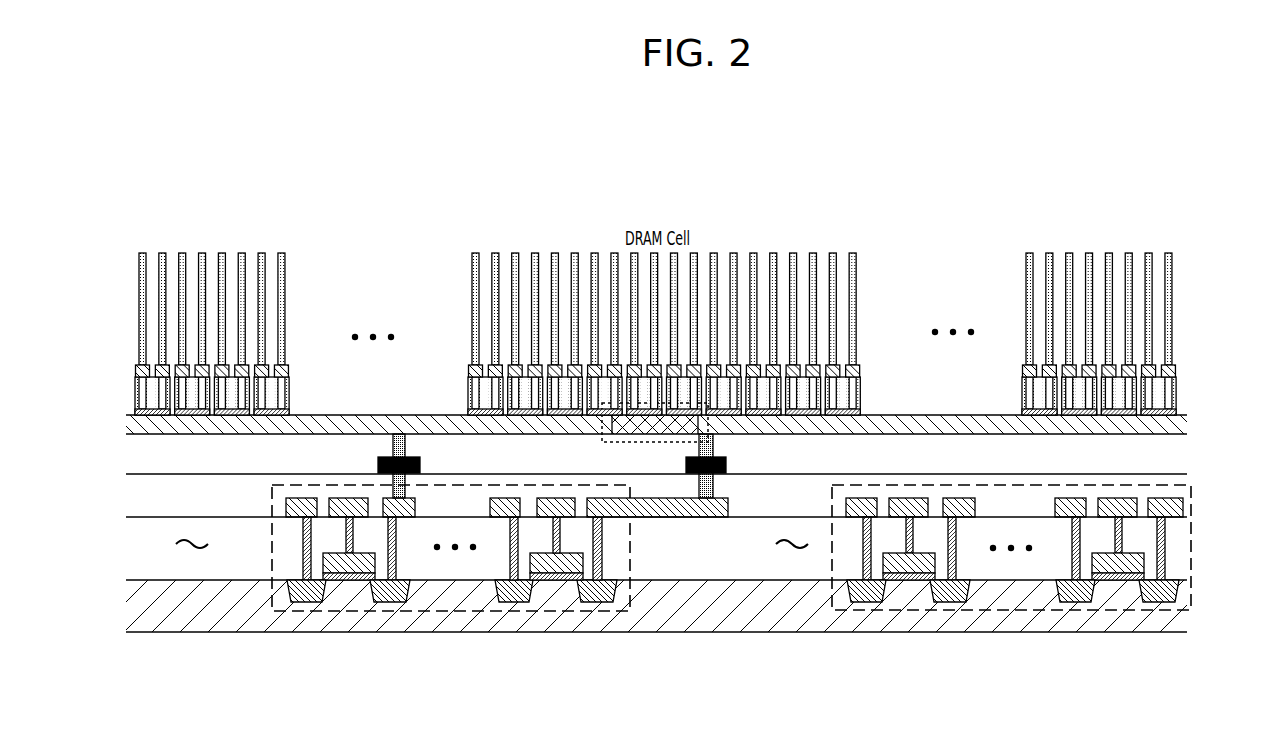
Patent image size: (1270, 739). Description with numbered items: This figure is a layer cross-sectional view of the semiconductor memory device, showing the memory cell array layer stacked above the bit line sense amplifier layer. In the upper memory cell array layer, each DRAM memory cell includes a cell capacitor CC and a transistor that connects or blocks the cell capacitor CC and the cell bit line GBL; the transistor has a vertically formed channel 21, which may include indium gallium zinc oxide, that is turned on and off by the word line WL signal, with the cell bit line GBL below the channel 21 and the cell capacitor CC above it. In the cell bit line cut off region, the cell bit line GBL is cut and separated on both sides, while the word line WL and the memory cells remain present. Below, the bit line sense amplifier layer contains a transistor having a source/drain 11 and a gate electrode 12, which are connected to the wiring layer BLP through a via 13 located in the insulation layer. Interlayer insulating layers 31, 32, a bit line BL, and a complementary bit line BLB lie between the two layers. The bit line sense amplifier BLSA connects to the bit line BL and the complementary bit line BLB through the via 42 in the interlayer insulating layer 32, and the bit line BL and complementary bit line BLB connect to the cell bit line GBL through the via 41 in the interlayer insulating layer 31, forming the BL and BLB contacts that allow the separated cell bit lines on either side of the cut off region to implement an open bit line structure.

The source/drain 11 is at (602, 600).
The gate electrode 12 is at (530, 557).
The via 13 is at (518, 531).
The channel 21 is at (1182, 404).
The interlayer insulating layer 31 is at (140, 457).
The interlayer insulating layer 32 is at (140, 496).
The via 41 is at (405, 452).
The via 42 is at (393, 490).
The cell capacitor CC is at (1172, 284).
The word line WL is at (1175, 388).
The cell bit line GBL is at (1186, 425).
The bit line BL is at (434, 463).
The complementary bit line BLB is at (668, 466).
The wiring layer BLP is at (1178, 502).
The bit line sense amplifier BLSA is at (1190, 573).